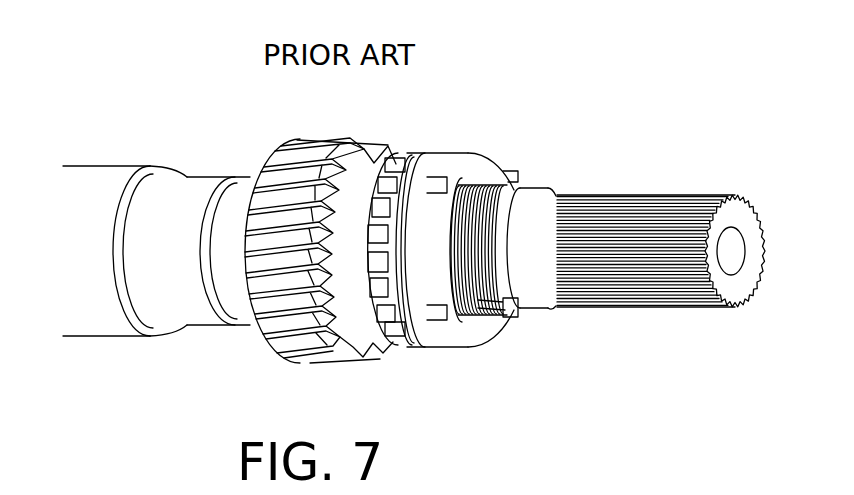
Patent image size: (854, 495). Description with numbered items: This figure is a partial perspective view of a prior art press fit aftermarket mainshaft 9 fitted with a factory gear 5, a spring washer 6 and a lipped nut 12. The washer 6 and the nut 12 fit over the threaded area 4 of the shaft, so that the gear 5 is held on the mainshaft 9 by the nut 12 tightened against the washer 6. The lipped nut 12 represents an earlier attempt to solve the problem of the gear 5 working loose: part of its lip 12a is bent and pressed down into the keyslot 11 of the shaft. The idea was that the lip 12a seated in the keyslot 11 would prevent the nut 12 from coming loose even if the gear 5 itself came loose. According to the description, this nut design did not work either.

The aftermarket mainshaft 9 is at (60, 92).
The threaded area 4 is at (513, 186).
The factory gear 5 is at (295, 118).
The spring washer 6 is at (425, 343).
The lipped nut 12 is at (492, 333).
The lip 12a is at (470, 190).
The keyslot 11 is at (512, 315).